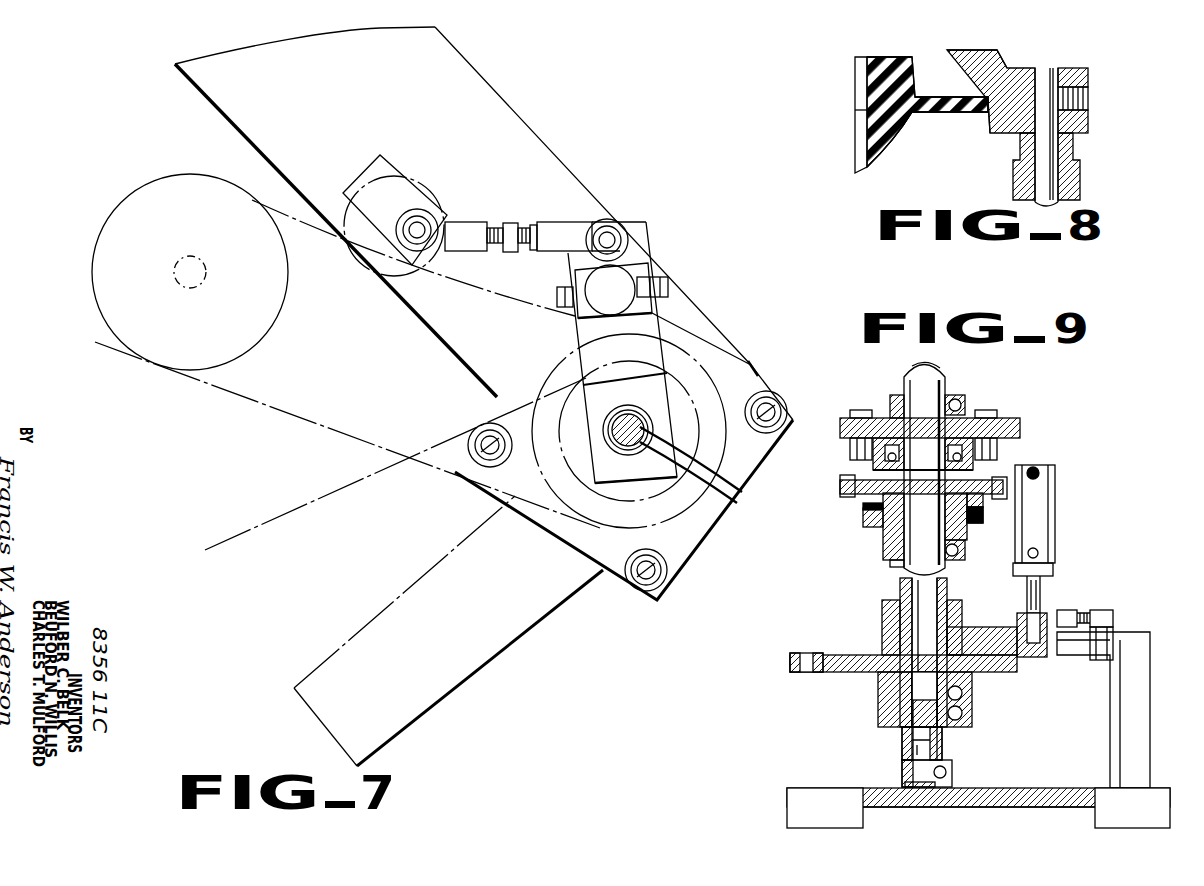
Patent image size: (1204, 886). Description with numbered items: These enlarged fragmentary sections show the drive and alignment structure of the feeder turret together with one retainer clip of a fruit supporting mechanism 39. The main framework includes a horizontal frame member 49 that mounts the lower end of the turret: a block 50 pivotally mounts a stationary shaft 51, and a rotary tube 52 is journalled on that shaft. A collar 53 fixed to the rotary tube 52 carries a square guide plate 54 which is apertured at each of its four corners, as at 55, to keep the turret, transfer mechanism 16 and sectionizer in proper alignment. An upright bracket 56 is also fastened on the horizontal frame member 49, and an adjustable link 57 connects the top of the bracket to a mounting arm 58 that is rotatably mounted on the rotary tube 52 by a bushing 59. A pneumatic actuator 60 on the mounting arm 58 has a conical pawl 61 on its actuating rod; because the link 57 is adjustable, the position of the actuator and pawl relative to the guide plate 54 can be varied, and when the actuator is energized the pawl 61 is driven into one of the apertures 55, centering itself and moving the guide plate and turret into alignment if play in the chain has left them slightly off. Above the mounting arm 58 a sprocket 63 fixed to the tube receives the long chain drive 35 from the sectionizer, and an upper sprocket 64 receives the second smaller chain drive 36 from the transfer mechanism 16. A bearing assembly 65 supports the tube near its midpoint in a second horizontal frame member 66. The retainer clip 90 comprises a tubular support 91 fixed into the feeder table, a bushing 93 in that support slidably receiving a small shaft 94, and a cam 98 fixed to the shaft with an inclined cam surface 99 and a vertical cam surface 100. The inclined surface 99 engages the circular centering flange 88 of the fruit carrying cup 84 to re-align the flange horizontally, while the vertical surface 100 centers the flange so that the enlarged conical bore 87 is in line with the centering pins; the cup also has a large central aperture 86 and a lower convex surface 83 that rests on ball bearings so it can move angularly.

In FIG. 7, the transfer mechanism 16 is at (145, 186).
In FIG. 7, the long chain drive 35 is at (343, 494).
In FIG. 9, the long chain drive 35 is at (868, 528).
In FIG. 7, the second smaller chain drive 36 is at (292, 416).
In FIG. 9, the second smaller chain drive 36 is at (860, 506).
In FIG. 8, the fruit supporting mechanism 39 is at (863, 106).
In FIG. 7, the horizontal frame member 49 is at (478, 632).
In FIG. 9, the horizontal frame member 49 is at (787, 798).
In FIG. 9, the block 50 is at (900, 770).
In FIG. 7, the stationary shaft 51 is at (750, 490).
In FIG. 9, the stationary shaft 51 is at (893, 713).
In FIG. 7, the rotary tube 52 is at (700, 493).
In FIG. 9, the rotary tube 52 is at (893, 693).
In FIG. 9, the collar 53 is at (885, 727).
In FIG. 7, the square guide plate 54 is at (607, 556).
In FIG. 9, the square guide plate 54 is at (857, 657).
In FIG. 7, the apertures 55 is at (479, 470).
In FIG. 9, the apertures 55 is at (807, 655).
In FIG. 7, the upright bracket 56 is at (402, 194).
In FIG. 9, the upright bracket 56 is at (1127, 735).
In FIG. 7, the adjustable link 57 is at (495, 230).
In FIG. 9, the adjustable link 57 is at (1086, 606).
In FIG. 7, the mounting arm 58 is at (652, 320).
In FIG. 9, the mounting arm 58 is at (992, 630).
In FIG. 7, the bushing 59 is at (603, 415).
In FIG. 9, the bushing 59 is at (897, 610).
In FIG. 7, the pneumatic actuator 60 is at (623, 277).
In FIG. 9, the pneumatic actuator 60 is at (1043, 487).
In FIG. 9, the conical pawl 61 is at (1053, 672).
In FIG. 7, the sprocket 63 is at (525, 495).
In FIG. 9, the sprocket 63 is at (983, 512).
In FIG. 7, the upper sprocket 64 is at (575, 347).
In FIG. 9, the upper sprocket 64 is at (860, 487).
In FIG. 9, the bearing assembly 65 is at (972, 452).
In FIG. 9, the second horizontal frame member 66 is at (1023, 418).
In FIG. 8, the lower convex surface 83 is at (903, 143).
In FIG. 8, the fruit carrying cup 84 is at (868, 154).
In FIG. 8, the large central aperture 86 is at (868, 125).
In FIG. 8, the enlarged conical bore 87 is at (885, 62).
In FIG. 8, the circular centering flange 88 is at (968, 112).
In FIG. 8, the retainer clips 90 is at (1077, 72).
In FIG. 8, the tubular support 91 is at (1075, 163).
In FIG. 8, the bushing 93 is at (1078, 182).
In FIG. 8, the small shaft 94 is at (1037, 175).
In FIG. 8, the cam 98 is at (1043, 88).
In FIG. 8, the inclined cam surface 99 is at (950, 60).
In FIG. 8, the vertical cam surface 100 is at (988, 108).